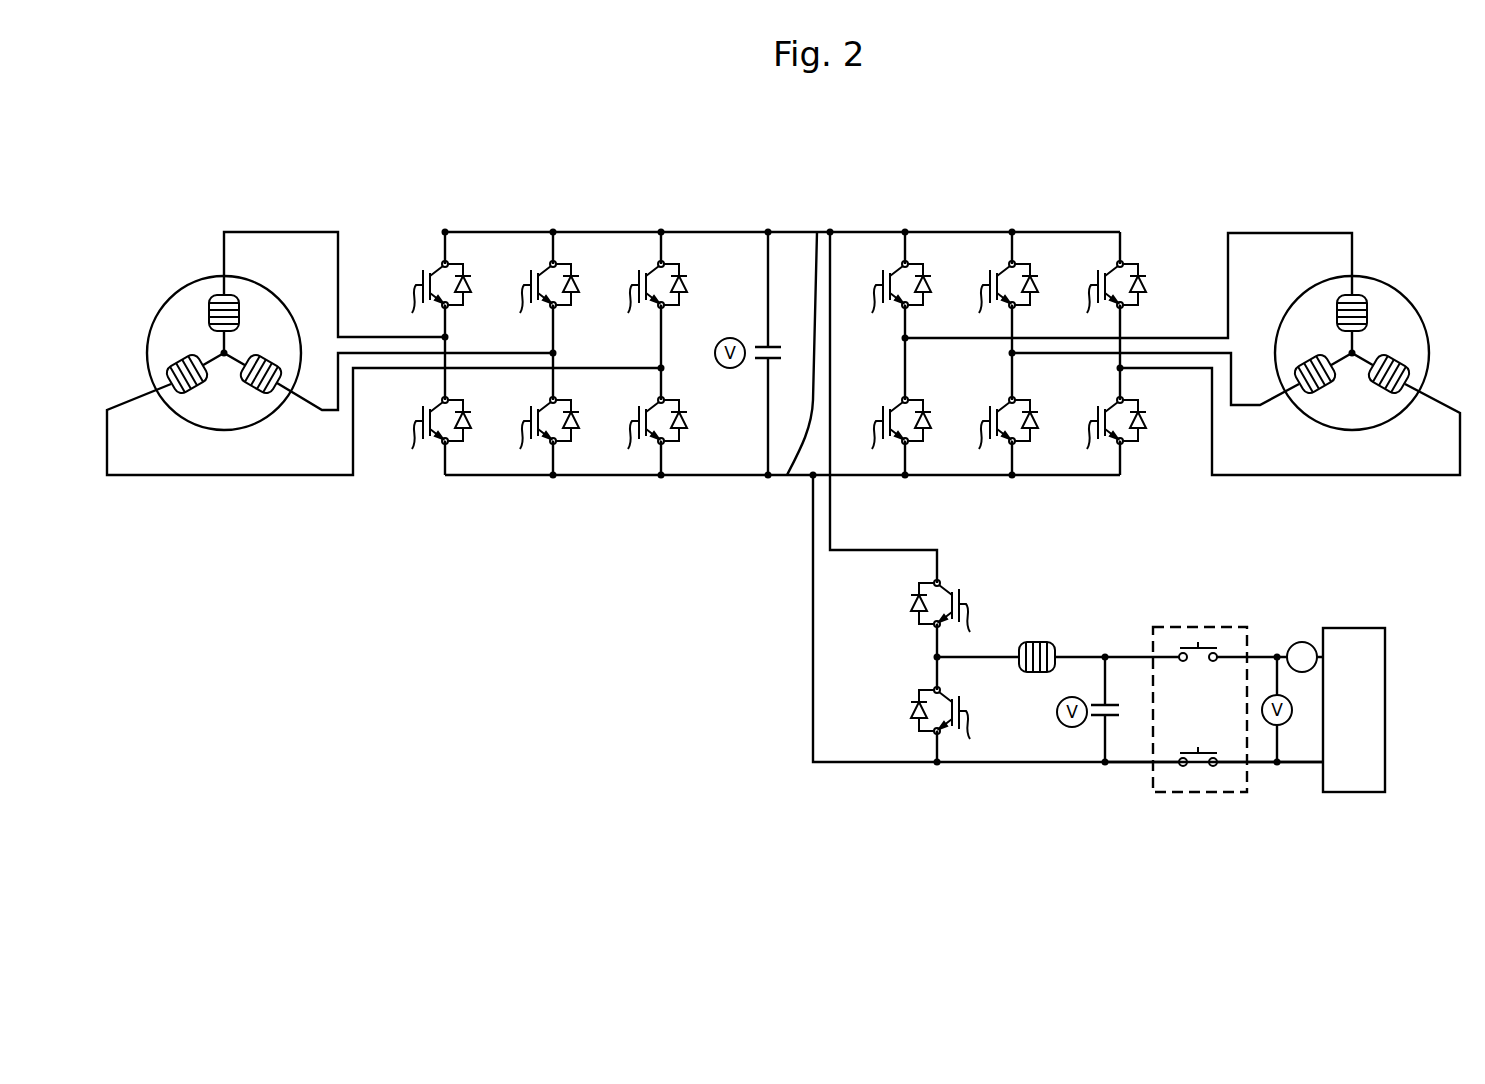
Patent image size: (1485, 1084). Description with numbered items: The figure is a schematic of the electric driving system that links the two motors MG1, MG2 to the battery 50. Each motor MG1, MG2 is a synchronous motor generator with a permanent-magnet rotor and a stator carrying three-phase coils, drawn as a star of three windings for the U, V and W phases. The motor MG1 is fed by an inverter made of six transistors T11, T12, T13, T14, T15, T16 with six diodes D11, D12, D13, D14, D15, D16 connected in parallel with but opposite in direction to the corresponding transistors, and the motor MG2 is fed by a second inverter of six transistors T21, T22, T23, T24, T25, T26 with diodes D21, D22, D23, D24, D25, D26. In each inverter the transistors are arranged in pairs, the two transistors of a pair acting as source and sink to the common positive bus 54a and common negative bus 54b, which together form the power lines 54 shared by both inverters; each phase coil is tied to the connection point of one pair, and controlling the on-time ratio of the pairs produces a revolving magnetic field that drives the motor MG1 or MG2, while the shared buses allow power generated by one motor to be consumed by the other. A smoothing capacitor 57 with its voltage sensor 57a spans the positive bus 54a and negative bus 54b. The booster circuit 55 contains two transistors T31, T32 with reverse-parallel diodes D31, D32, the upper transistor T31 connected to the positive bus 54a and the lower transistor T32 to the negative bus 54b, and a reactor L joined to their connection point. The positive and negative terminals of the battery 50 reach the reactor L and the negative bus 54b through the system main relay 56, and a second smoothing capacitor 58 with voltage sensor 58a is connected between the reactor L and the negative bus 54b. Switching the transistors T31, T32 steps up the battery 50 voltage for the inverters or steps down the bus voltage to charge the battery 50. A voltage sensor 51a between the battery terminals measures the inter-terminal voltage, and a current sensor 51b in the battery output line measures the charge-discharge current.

The battery 50 is at (1355, 628).
The voltage sensor 51a is at (1270, 725).
The current sensor 51b is at (1302, 642).
The power lines 54 is at (850, 195).
The positive bus 54a is at (787, 230).
The negative bus 54b is at (820, 230).
The booster circuit 55 is at (1007, 560).
The system main relay 56 is at (1200, 627).
The smoothing capacitor 57 is at (757, 340).
The voltage sensor 57a is at (730, 368).
The smoothing capacitor 58 is at (1108, 702).
The voltage sensor 58a is at (1064, 726).
The reactor L is at (1037, 640).
The motor MG1 is at (1413, 302).
The motor MG2 is at (172, 301).
The transistor T11 is at (881, 300).
The transistor T12 is at (988, 300).
The transistor T13 is at (1096, 300).
The transistor T14 is at (881, 436).
The transistor T15 is at (988, 436).
The transistor T16 is at (1096, 436).
The transistor T21 is at (421, 300).
The transistor T22 is at (529, 300).
The transistor T23 is at (637, 300).
The transistor T24 is at (421, 436).
The transistor T25 is at (529, 436).
The transistor T26 is at (637, 436).
The transistor T31 is at (960, 618).
The transistor T32 is at (960, 724).
The diode D11 is at (932, 274).
The diode D12 is at (1039, 274).
The diode D13 is at (1147, 274).
The diode D14 is at (932, 411).
The diode D15 is at (1039, 411).
The diode D16 is at (1147, 411).
The diode D21 is at (472, 274).
The diode D22 is at (580, 274).
The diode D23 is at (688, 274).
The diode D24 is at (472, 411).
The diode D25 is at (580, 411).
The diode D26 is at (688, 411).
The diode D31 is at (910, 593).
The diode D32 is at (910, 700).